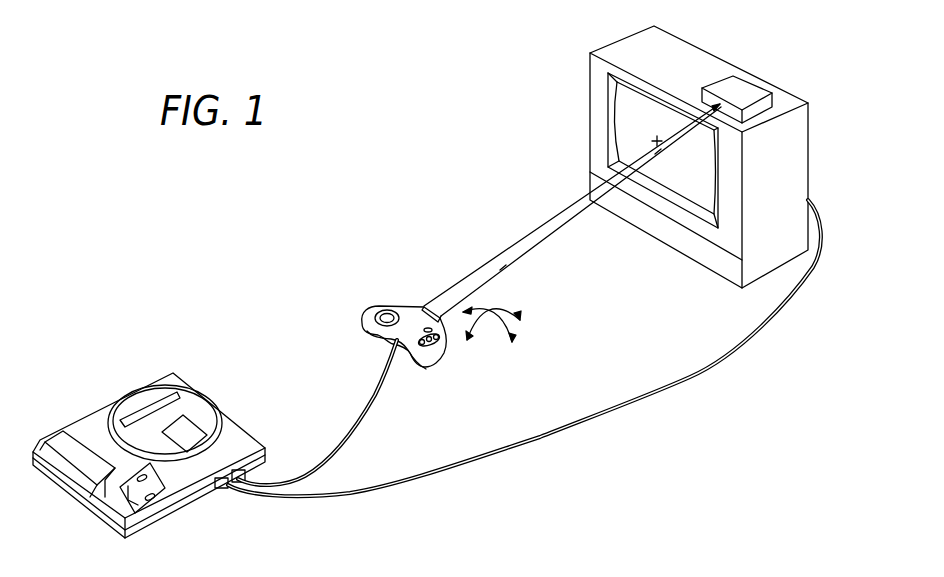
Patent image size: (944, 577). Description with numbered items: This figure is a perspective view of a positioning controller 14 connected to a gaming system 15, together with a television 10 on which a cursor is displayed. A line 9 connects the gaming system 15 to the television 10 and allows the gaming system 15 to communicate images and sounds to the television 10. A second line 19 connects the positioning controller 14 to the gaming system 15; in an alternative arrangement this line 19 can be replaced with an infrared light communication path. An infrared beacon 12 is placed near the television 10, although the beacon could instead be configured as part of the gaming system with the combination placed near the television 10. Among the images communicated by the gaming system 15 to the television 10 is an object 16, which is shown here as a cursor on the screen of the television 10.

The television 10 is at (633, 37).
The infrared beacon 12 is at (738, 90).
The positioning controller 14 is at (402, 312).
The gaming system 15 is at (117, 400).
The object 16 is at (650, 136).
The line 19 is at (335, 448).
The line 9 is at (585, 420).